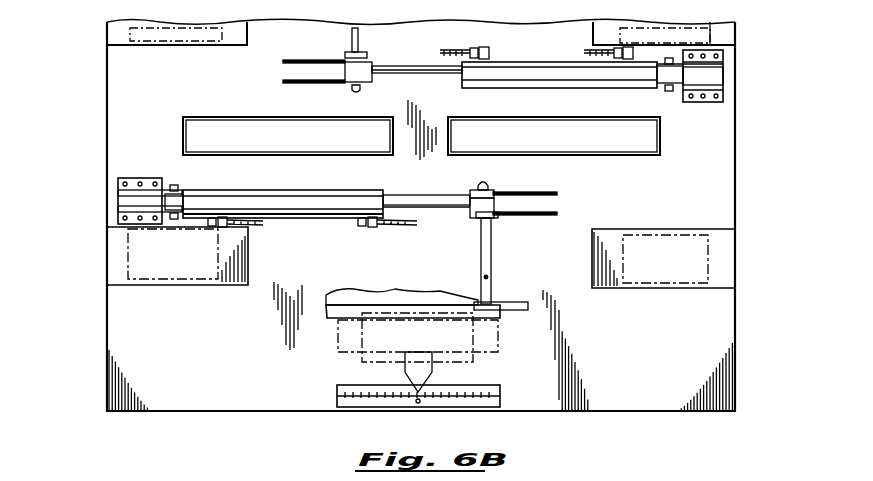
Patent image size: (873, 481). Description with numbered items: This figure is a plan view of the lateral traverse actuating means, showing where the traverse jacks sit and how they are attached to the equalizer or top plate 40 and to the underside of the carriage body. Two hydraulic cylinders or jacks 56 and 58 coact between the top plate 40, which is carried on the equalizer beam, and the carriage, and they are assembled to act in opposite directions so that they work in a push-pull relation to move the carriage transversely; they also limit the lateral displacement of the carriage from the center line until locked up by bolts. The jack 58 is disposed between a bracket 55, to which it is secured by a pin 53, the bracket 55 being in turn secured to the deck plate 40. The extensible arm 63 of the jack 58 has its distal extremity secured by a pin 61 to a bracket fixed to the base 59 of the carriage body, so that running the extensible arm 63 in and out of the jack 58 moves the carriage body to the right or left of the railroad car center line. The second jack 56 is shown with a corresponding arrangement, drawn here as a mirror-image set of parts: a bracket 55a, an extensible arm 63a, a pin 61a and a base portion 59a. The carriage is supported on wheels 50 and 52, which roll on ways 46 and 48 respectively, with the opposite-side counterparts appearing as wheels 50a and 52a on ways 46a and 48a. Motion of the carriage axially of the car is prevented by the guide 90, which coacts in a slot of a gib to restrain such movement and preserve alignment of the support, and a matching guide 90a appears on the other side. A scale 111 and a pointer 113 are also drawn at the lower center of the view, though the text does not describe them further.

The top plate 40 is at (107, 131).
The way 46 is at (120, 45).
The right end block 46a is at (726, 42).
The wheel 50 is at (228, 48).
The right guide bushing 50a is at (740, 30).
The wheel 52 is at (168, 274).
The right support block 52a is at (655, 242).
The way 48 is at (222, 286).
The right mounting block 48a is at (712, 290).
The pin 53 is at (172, 185).
The bracket 55 is at (120, 200).
The right bracket 55a is at (722, 76).
The hydraulic jack 56 is at (526, 64).
The hydraulic jack 58 is at (326, 218).
The base 59 is at (540, 216).
The upper guide bars 59a is at (300, 84).
The pin 61 is at (490, 256).
The upper slide pin 61a is at (352, 40).
The extensible arm 63 is at (440, 208).
The upper piston rod 63a is at (404, 64).
The guide 90 is at (192, 126).
The right plate 90a is at (655, 134).
The scale 111 is at (337, 393).
The pointer 113 is at (400, 376).